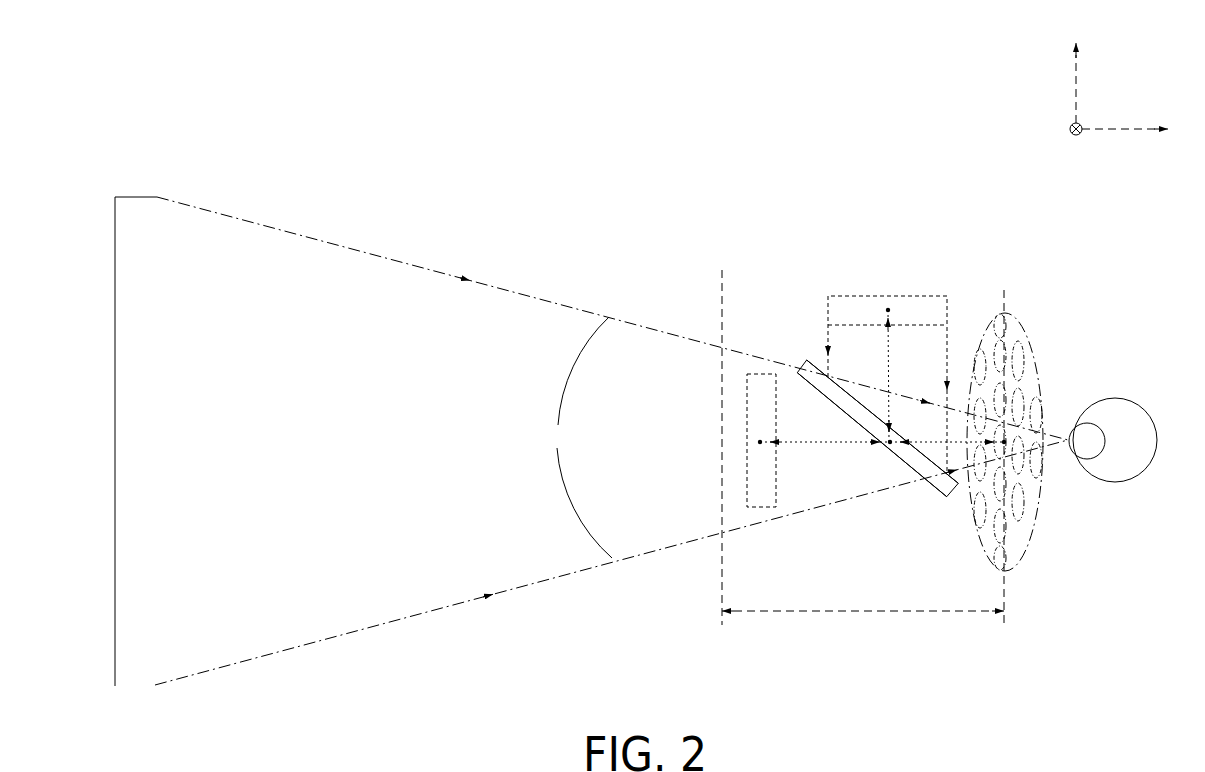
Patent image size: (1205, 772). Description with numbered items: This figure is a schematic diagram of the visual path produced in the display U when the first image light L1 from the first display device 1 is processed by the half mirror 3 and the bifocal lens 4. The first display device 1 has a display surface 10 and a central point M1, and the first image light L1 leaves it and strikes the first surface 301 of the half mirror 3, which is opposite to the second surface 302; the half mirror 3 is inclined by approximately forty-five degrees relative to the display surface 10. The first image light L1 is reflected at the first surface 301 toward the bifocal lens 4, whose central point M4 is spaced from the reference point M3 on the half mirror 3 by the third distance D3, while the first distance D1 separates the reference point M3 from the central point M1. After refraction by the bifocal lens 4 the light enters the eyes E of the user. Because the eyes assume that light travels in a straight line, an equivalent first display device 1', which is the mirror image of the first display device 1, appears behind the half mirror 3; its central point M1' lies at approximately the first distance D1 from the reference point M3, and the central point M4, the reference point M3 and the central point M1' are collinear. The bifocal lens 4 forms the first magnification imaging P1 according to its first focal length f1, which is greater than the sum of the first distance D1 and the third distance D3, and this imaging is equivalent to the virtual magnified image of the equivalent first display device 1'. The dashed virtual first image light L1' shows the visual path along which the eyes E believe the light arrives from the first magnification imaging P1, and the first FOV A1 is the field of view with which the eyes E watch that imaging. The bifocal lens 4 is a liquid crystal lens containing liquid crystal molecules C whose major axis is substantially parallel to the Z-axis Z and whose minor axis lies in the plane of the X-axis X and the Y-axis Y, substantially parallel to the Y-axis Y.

The first magnification imaging P1 is at (115, 197).
The virtual first image light L1' is at (611, 441).
The first FOV A1 is at (569, 437).
The display U is at (592, 113).
The first focal length f1 is at (863, 460).
The equivalent first display device 1' is at (782, 440).
The first display device 1 is at (889, 362).
The display surface 10 is at (897, 326).
The first image light L1 is at (964, 317).
The central point M1 is at (871, 269).
The first distance D1 is at (825, 377).
The third distance D3 is at (947, 427).
The central point M1' is at (710, 444).
The reference point M3 is at (887, 447).
The central point M4 is at (1010, 444).
The half mirror 3 is at (953, 497).
The first surface 301 is at (812, 358).
The second surface 302 is at (933, 484).
The bifocal lens 4 is at (1037, 530).
The liquid crystal molecules C is at (1024, 358).
The eyes E is at (1140, 404).
The X-axis X is at (1133, 131).
The Y-axis Y is at (1068, 134).
The Z-axis Z is at (1076, 64).